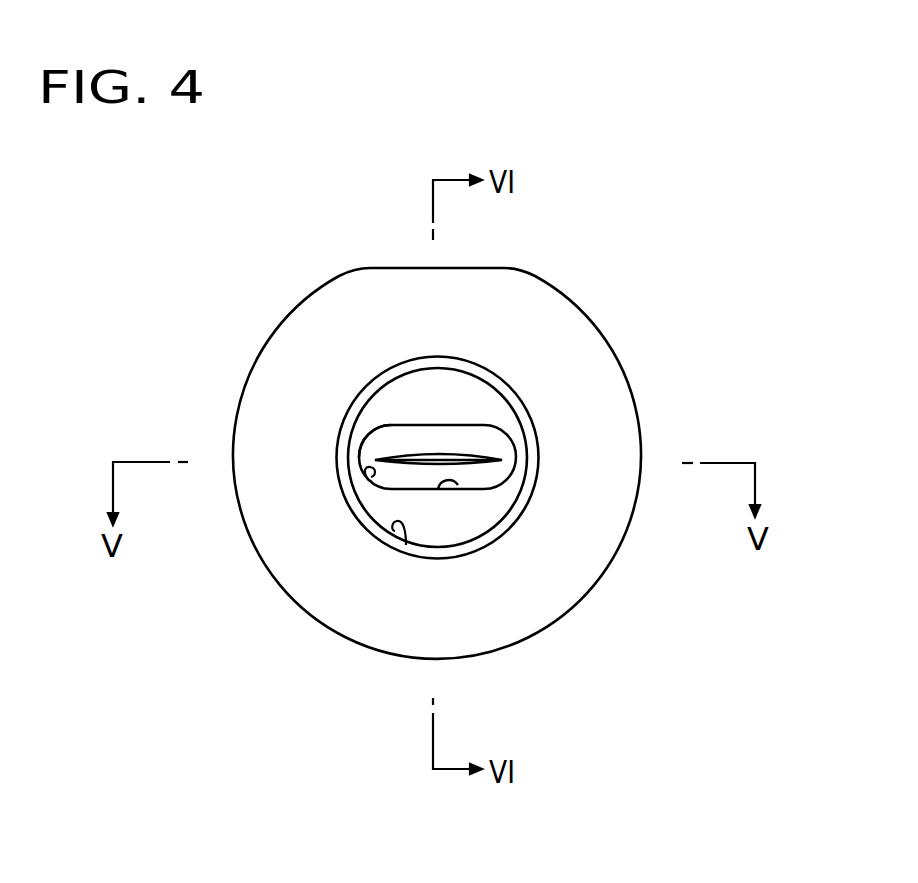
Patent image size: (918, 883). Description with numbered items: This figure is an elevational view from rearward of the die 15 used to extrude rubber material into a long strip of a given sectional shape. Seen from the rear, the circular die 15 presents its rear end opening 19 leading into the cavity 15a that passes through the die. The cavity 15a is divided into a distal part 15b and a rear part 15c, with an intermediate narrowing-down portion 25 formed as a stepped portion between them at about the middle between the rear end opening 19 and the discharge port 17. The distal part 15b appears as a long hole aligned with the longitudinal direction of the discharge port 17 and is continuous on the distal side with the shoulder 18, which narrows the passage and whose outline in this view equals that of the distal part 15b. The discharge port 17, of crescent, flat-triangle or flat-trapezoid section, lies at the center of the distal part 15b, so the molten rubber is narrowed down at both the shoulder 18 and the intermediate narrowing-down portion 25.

The die 15 is at (607, 397).
The cavity 15a is at (372, 422).
The distal part of the cavity 15b is at (372, 482).
The rear part of the cavity 15c is at (406, 545).
The discharge port 17 is at (422, 455).
The shoulder 18 is at (474, 440).
The rear end opening 19 is at (515, 498).
The intermediate narrowing-down portion 25 is at (458, 485).